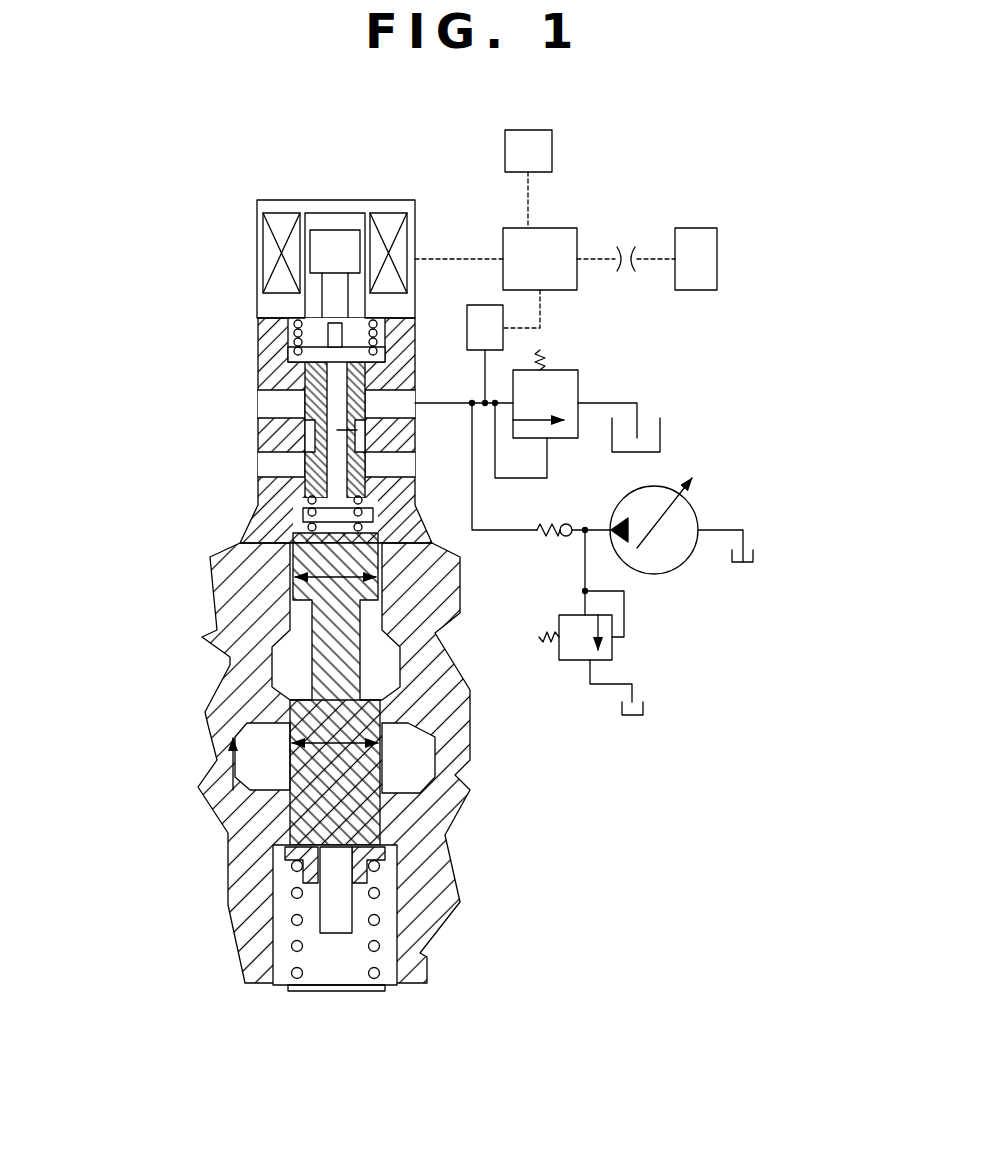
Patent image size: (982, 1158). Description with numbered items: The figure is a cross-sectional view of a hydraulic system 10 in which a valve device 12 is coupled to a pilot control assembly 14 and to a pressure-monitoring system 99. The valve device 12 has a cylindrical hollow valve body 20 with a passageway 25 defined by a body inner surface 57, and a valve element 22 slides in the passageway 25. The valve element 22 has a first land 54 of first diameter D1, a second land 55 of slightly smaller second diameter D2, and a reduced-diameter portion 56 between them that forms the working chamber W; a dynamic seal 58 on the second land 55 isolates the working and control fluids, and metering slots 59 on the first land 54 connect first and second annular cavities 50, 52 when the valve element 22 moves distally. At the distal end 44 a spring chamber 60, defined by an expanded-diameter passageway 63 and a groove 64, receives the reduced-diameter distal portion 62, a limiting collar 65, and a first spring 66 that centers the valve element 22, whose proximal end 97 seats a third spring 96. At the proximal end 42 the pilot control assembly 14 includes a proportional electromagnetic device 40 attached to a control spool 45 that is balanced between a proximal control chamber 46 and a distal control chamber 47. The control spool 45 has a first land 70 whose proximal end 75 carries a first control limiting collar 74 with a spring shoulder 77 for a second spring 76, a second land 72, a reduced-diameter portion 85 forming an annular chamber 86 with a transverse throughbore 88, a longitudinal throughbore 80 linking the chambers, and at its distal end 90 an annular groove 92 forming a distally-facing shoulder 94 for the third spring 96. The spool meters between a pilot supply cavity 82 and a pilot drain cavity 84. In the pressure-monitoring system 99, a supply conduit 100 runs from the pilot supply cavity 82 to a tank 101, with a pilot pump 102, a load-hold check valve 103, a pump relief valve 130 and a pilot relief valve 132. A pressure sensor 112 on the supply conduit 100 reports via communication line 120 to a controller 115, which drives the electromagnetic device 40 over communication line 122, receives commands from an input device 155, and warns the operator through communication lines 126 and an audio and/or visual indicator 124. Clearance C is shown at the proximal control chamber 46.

The hydraulic system 10 is at (242, 127).
The valve device 12 is at (134, 740).
The pilot control assembly 14 is at (256, 247).
The valve body 20 is at (222, 803).
The valve element 22 is at (367, 820).
The passageway 25 is at (395, 665).
The electromagnetic device 40 is at (388, 218).
The proximal end 42 is at (136, 252).
The distal end 44 is at (153, 915).
The control spool 45 is at (265, 490).
The proximal control chamber 46 is at (294, 328).
The distal control chamber 47 is at (390, 550).
The first annular cavity 50 is at (296, 713).
The second annular cavity 52 is at (292, 625).
The first land 54 is at (452, 790).
The second land 55 is at (290, 560).
The reduced-diameter portion 56 is at (398, 628).
The body inner surface 57 is at (283, 680).
The dynamic seal 58 is at (290, 578).
The metering slots 59 is at (384, 700).
The spring chamber 60 is at (393, 947).
The reduced-diameter distal portion 62 is at (318, 910).
The expanded-diameter passageway 63 is at (272, 958).
The groove 64 is at (357, 978).
The limiting collar 65 is at (383, 853).
The first spring 66 is at (292, 890).
The first land 70 is at (307, 377).
The second land 72 is at (264, 472).
The first control limiting collar 74 is at (357, 352).
The proximal end 75 is at (368, 370).
The second spring 76 is at (380, 322).
The spring shoulder 77 is at (307, 316).
The longitudinal throughbore 80 is at (360, 443).
The pilot supply cavity 82 is at (268, 402).
The pilot drain cavity 84 is at (268, 454).
The reduced-diameter portion 85 is at (340, 430).
The annular chamber 86 is at (365, 470).
The transverse throughbore 88 is at (316, 436).
The distal end 90 is at (362, 515).
The annular groove 92 is at (302, 502).
The distally-facing shoulder 94 is at (362, 498).
The third spring 96 is at (305, 525).
The proximal end 97 is at (384, 568).
The pressure-monitoring system 99 is at (757, 337).
The supply conduit 100 is at (478, 498).
The tank 101 is at (667, 432).
The pilot pump 102 is at (698, 500).
The load-hold check valve 103 is at (557, 523).
The pressure sensor 112 is at (493, 303).
The controller 115 is at (540, 259).
The communication line 120 is at (544, 312).
The communication line 122 is at (451, 258).
The audio and/or visual indicator 124 is at (696, 259).
The communication lines 126 is at (600, 258).
The pump relief valve 130 is at (615, 650).
The pilot relief valve 132 is at (566, 414).
The input device 155 is at (528, 179).
The clearance C is at (284, 336).
The working chamber W is at (230, 739).
The first diameter D1 is at (290, 745).
The second diameter D2 is at (382, 592).